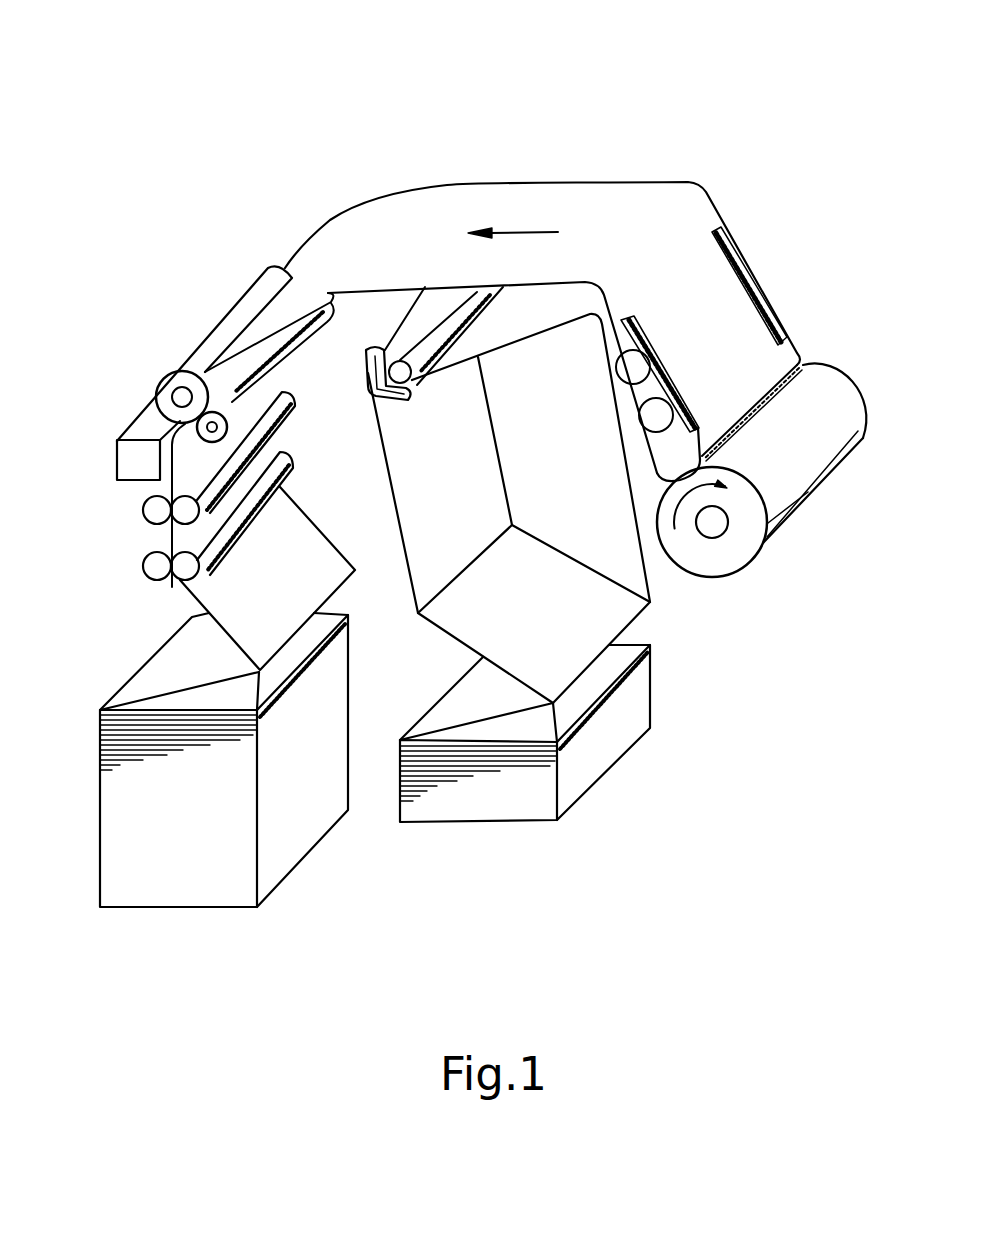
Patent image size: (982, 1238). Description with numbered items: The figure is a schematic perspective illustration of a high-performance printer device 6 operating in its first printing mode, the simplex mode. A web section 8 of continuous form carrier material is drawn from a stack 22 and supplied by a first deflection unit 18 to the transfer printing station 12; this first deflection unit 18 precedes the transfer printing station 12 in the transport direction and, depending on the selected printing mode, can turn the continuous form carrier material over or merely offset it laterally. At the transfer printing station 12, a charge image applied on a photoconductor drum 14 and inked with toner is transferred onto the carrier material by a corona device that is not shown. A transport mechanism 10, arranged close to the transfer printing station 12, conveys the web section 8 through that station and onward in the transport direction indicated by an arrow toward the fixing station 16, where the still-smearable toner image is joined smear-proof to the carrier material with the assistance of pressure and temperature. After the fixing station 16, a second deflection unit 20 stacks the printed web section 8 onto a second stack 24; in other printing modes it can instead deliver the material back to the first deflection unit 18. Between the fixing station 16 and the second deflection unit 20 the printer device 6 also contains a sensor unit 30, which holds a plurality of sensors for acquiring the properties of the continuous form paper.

The printer device 6 is at (316, 84).
The web section 8 is at (567, 190).
The transport mechanism 10 is at (786, 250).
The transfer printing station 12 is at (827, 353).
The photoconductor drum 14 is at (806, 492).
The fixing station 16 is at (143, 352).
The first deflection unit 18 is at (372, 400).
The second deflection unit 20 is at (125, 538).
The stack 22 is at (590, 773).
The second stack 24 is at (290, 857).
The sensor unit 30 is at (117, 462).